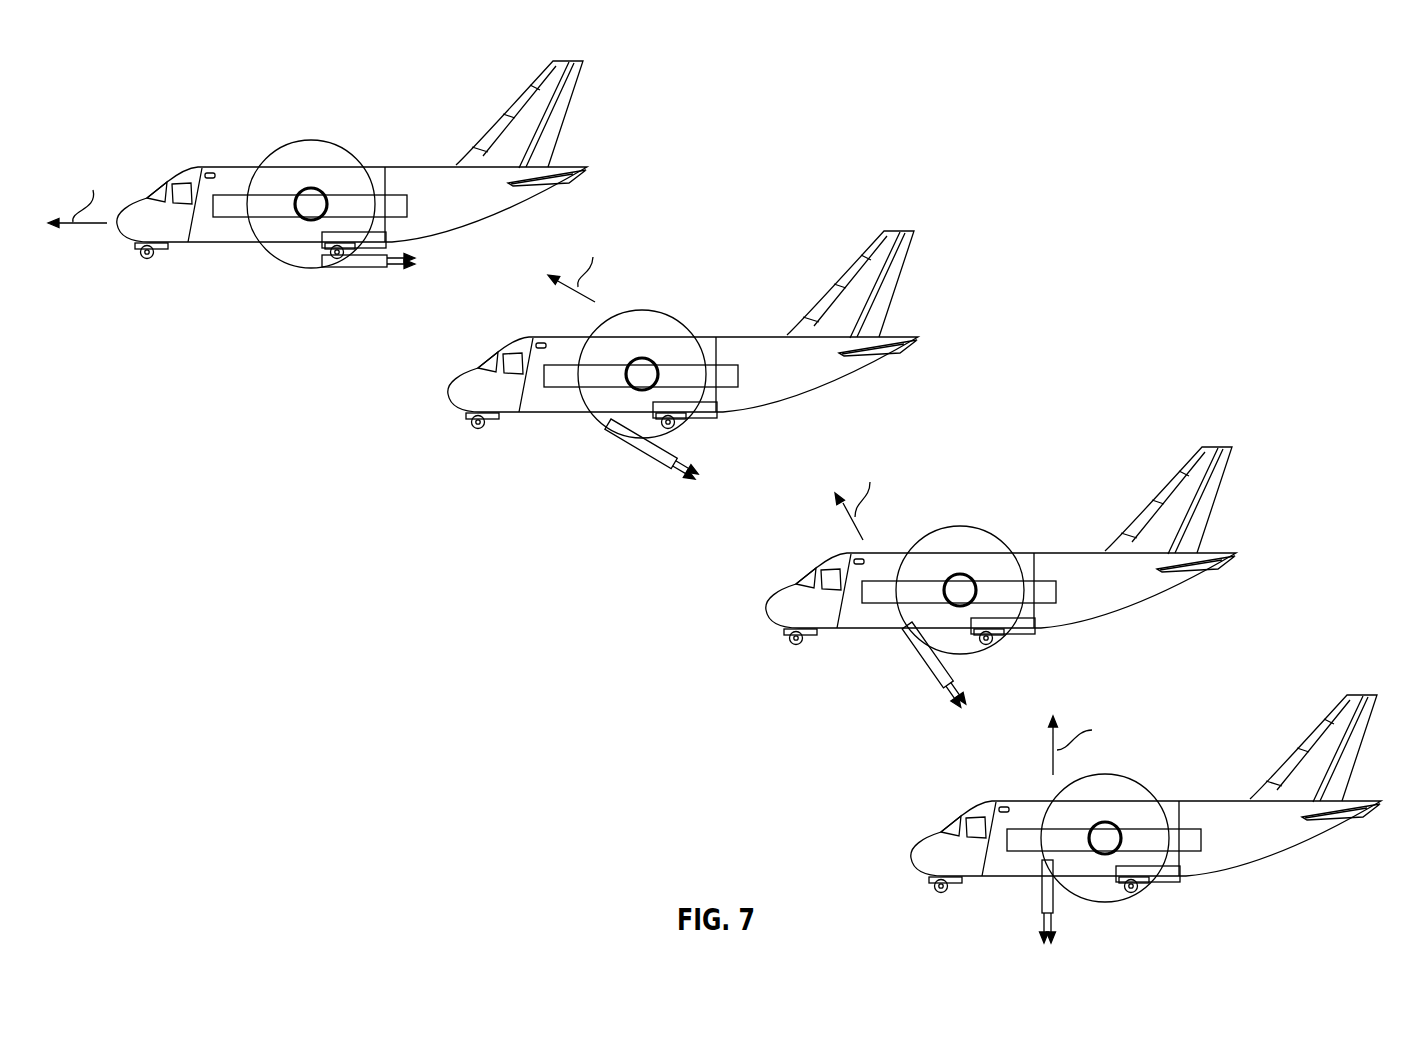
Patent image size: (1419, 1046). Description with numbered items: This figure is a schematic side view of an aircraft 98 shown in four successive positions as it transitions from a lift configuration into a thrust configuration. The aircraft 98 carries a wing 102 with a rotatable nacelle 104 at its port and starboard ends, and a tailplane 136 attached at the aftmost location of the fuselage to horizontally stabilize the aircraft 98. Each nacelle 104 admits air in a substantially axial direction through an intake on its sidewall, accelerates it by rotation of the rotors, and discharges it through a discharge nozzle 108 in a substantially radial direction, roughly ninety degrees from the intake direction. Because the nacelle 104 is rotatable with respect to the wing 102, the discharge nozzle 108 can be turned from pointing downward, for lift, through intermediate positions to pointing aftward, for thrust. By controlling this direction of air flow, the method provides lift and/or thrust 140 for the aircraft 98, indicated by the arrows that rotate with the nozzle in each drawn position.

The aircraft 98 is at (243, 153).
The wing 102 is at (233, 208).
The nacelle 104 is at (350, 150).
The discharge nozzle 108 is at (367, 268).
The tailplane 136 is at (562, 105).
The lift and/or thrust 140 is at (591, 466).